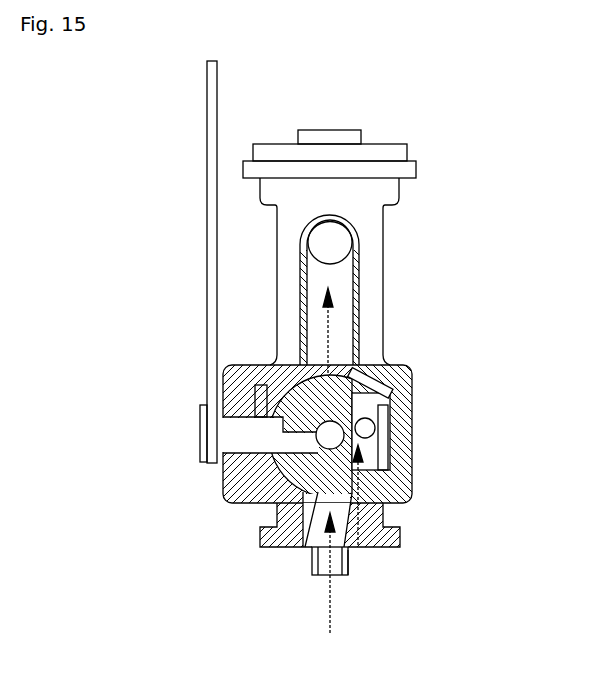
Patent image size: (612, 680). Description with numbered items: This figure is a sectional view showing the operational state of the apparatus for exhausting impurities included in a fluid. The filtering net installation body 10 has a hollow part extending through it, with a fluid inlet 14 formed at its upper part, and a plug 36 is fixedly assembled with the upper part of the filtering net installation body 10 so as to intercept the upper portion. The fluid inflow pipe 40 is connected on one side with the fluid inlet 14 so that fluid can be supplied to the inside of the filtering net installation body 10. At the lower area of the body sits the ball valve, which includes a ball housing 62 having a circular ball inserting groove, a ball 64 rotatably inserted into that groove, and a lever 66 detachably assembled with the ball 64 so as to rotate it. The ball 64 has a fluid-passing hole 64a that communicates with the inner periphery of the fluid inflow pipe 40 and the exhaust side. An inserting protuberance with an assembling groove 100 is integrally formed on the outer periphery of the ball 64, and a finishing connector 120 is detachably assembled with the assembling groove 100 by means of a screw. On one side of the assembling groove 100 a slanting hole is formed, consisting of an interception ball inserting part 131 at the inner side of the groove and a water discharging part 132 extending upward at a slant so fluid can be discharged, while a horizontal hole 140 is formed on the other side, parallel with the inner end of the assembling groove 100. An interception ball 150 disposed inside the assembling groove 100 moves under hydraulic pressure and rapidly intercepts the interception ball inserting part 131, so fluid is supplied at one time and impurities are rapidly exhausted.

The filtering net installation body 10 is at (278, 262).
The fluid inlet 14 is at (352, 238).
The plug 36 is at (373, 144).
The fluid inflow pipe 40 is at (359, 295).
The ball housing 62 is at (258, 505).
The ball 64 is at (305, 547).
The fluid-passing hole 64a is at (228, 470).
The lever 66 is at (213, 140).
The assembling groove 100 is at (363, 543).
The finishing connector 120 is at (405, 497).
The interception ball inserting part 131 is at (383, 424).
The water discharging part 132 is at (412, 375).
The horizontal hole 140 is at (341, 590).
The interception ball 150 is at (400, 450).